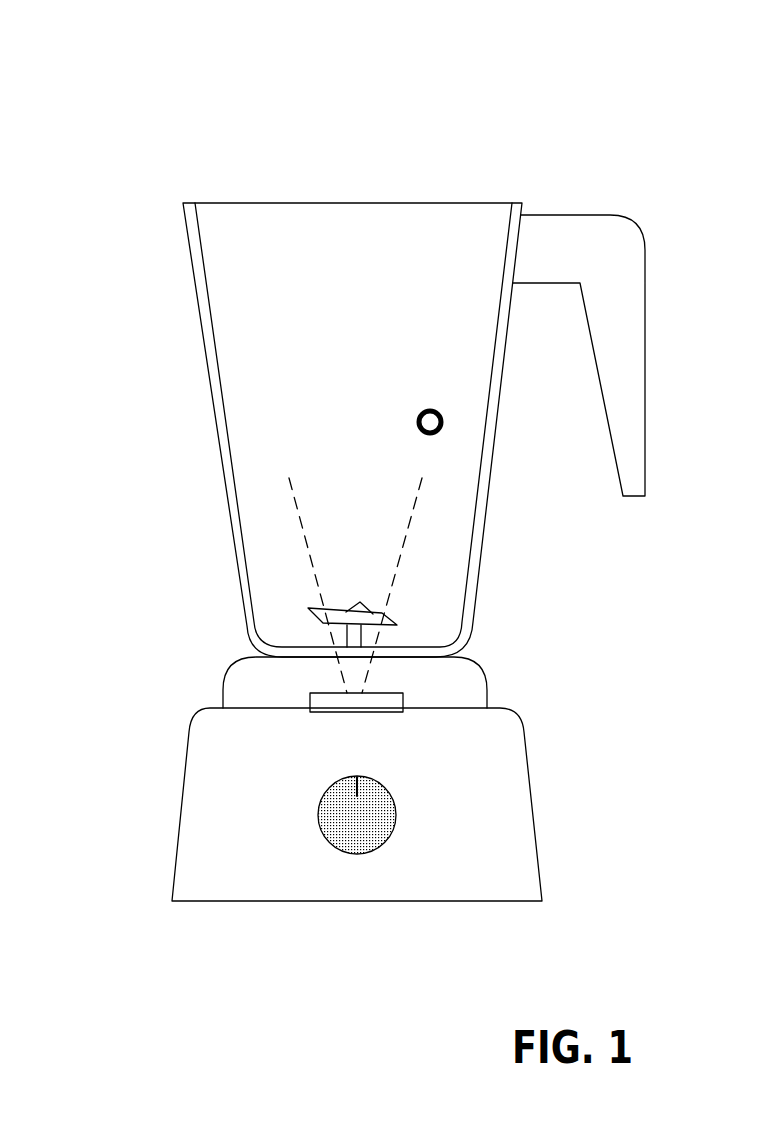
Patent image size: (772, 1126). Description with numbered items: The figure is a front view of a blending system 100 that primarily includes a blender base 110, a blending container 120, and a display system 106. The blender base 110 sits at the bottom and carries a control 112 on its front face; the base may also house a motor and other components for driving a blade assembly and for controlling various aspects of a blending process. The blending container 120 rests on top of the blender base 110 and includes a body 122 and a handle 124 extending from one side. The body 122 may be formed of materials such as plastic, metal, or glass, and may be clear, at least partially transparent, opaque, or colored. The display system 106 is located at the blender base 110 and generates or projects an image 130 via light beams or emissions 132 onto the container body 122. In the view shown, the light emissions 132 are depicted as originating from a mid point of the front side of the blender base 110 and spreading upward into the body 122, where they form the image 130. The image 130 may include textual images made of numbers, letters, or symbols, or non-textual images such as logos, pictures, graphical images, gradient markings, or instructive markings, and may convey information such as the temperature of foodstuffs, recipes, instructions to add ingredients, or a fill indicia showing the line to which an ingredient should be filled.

The blending system 100 is at (122, 58).
The display system 106 is at (328, 700).
The blender base 110 is at (193, 821).
The control 112 is at (377, 840).
The blending container 120 is at (170, 280).
The body 122 is at (450, 227).
The handle 124 is at (627, 410).
The image 130 is at (293, 427).
The light emissions 132 is at (397, 575).